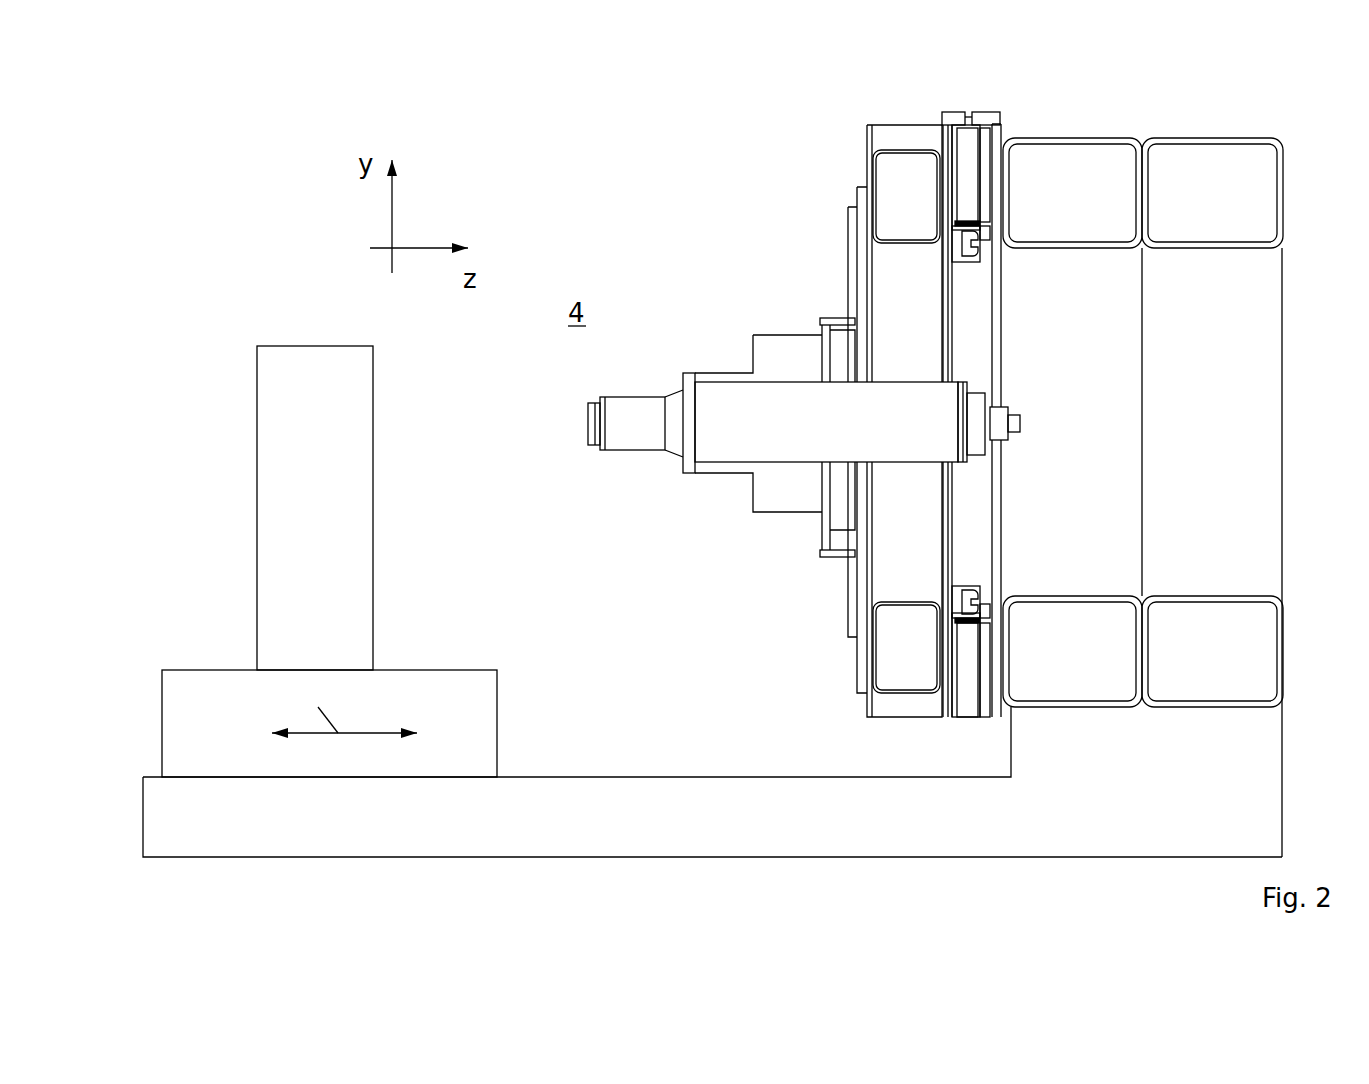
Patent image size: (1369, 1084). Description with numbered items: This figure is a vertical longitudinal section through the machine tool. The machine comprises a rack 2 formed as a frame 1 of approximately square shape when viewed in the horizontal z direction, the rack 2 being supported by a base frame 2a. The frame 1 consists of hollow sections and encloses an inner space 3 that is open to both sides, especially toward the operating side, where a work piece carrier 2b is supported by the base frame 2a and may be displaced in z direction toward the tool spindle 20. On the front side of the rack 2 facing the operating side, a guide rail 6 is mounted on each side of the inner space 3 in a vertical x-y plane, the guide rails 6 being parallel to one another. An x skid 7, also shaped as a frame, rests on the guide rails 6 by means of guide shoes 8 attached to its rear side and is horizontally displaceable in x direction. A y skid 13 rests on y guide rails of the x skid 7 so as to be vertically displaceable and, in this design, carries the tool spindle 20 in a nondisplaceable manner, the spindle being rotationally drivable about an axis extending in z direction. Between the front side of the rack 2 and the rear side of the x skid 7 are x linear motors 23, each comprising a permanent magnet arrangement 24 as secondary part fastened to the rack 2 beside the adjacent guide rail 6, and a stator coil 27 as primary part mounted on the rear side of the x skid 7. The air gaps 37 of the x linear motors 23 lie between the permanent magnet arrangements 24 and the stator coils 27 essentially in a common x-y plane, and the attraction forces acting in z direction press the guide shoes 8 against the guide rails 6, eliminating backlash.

The frame 1 is at (1283, 170).
The rack 2 is at (1286, 634).
The base frame 2a is at (583, 777).
The work piece carrier 2b is at (444, 717).
The inner space 3 is at (1203, 440).
The guide rail 6 is at (982, 248).
The x skid 7 is at (866, 143).
The guide shoes 8 is at (973, 262).
The y skid 13 is at (818, 515).
The tool spindle 20 is at (638, 420).
The x linear motors 23 is at (966, 158).
The permanent magnet arrangement 24 is at (985, 170).
The stator coil 27 is at (960, 181).
The air gaps 37 is at (985, 192).